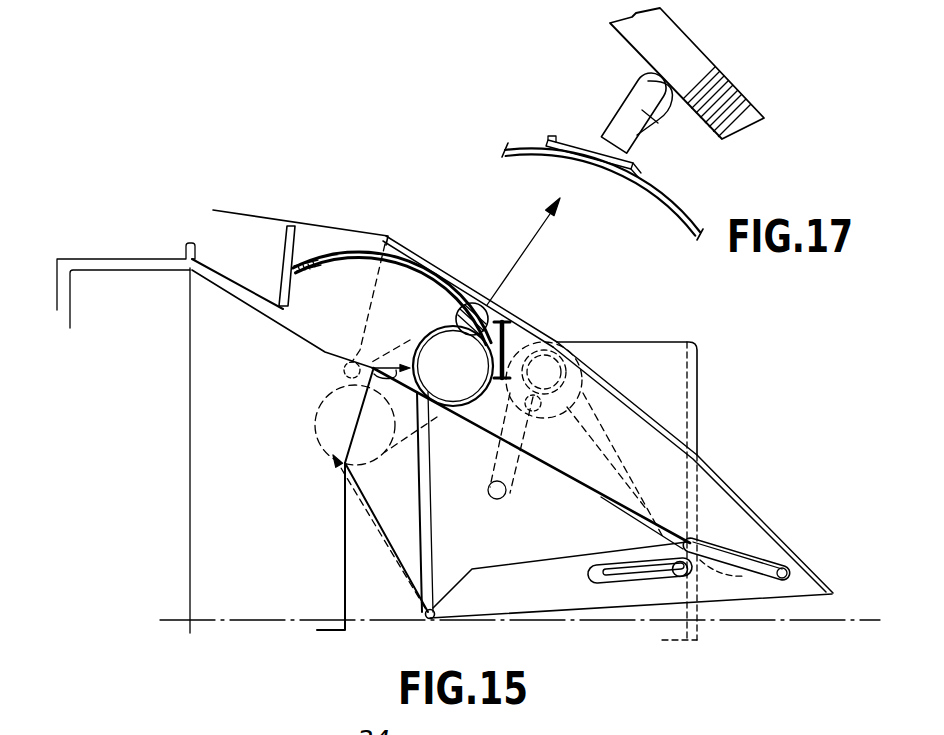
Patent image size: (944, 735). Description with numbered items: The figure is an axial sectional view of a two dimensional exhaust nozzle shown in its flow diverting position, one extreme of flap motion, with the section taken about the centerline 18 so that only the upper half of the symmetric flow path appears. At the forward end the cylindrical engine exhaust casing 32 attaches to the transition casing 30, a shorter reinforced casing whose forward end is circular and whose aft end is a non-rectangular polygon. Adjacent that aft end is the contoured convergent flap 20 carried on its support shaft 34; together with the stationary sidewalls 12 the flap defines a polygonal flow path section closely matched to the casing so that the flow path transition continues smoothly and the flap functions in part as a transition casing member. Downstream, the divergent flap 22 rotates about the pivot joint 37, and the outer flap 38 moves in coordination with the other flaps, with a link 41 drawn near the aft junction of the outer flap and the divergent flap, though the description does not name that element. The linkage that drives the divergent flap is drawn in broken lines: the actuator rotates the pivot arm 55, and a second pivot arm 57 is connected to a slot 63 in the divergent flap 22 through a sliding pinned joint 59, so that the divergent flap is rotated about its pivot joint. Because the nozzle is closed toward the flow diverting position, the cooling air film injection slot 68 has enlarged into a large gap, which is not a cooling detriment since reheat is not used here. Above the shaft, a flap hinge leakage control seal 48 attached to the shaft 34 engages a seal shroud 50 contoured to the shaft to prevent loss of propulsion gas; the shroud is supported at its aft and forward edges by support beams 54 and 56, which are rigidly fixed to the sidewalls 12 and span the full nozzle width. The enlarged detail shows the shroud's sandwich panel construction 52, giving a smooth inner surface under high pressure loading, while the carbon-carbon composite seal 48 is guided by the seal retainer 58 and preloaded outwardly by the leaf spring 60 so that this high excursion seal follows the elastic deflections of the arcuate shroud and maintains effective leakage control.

In FIG. 15, the sidewalls 12 is at (676, 378).
In FIG. 15, the centerline 18 is at (743, 619).
In FIG. 15, the convergent flap 20 is at (430, 507).
In FIG. 15, the divergent flap 22 is at (508, 600).
In FIG. 15, the transition casing 30 is at (240, 285).
In FIG. 15, the cylindrical engine exhaust casing 32 is at (124, 259).
In FIG. 15, the support shaft 34 is at (422, 345).
In FIG. 17, the support shaft 34 is at (659, 190).
In FIG. 15, the pivot joint 37 is at (427, 620).
In FIG. 15, the outer flap 38 is at (724, 488).
In FIG. 15, the link 41 is at (750, 560).
In FIG. 15, the flap hinge leakage control seal 48 is at (460, 311).
In FIG. 17, the flap hinge leakage control seal 48 is at (647, 123).
In FIG. 15, the seal shroud 50 is at (415, 252).
In FIG. 17, the seal shroud 50 is at (690, 35).
In FIG. 17, the sandwich panel construction 52 is at (745, 135).
In FIG. 15, the support beam 54 is at (287, 243).
In FIG. 15, the pivot arm 55 is at (520, 472).
In FIG. 15, the support beam 56 is at (508, 330).
In FIG. 15, the second pivot arm 57 is at (603, 472).
In FIG. 17, the seal retainer 58 is at (623, 100).
In FIG. 15, the sliding pinned joint 59 is at (673, 577).
In FIG. 17, the leaf spring 60 is at (602, 133).
In FIG. 15, the slot 63 is at (613, 578).
In FIG. 15, the cooling air film injection slot 68 is at (352, 377).